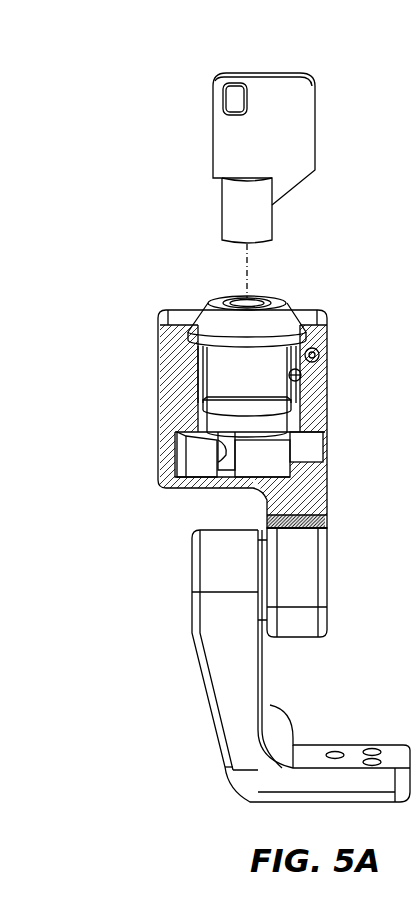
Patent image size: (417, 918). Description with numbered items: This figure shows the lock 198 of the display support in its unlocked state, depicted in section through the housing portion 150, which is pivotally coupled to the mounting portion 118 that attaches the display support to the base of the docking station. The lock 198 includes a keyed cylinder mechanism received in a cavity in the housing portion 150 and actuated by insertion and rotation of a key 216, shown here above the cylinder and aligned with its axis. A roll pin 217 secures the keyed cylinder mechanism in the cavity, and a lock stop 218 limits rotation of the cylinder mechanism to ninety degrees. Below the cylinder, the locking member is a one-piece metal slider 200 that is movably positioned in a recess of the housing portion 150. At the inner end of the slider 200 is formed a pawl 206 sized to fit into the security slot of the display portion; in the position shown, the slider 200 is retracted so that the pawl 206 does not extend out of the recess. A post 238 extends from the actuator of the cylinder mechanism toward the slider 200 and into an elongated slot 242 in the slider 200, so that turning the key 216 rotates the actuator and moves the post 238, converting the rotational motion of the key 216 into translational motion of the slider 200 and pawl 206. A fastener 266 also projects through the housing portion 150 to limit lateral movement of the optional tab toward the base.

The lock 198 is at (190, 252).
The key 216 is at (260, 223).
The housing portion 150 is at (158, 375).
The fastener 266 is at (319, 352).
The roll pin 217 is at (301, 375).
The lock stop 218 is at (296, 403).
The pawl 206 is at (320, 440).
The slot 242 is at (178, 435).
The slider 200 is at (203, 467).
The post 238 is at (228, 467).
The mounting portion 118 is at (232, 703).